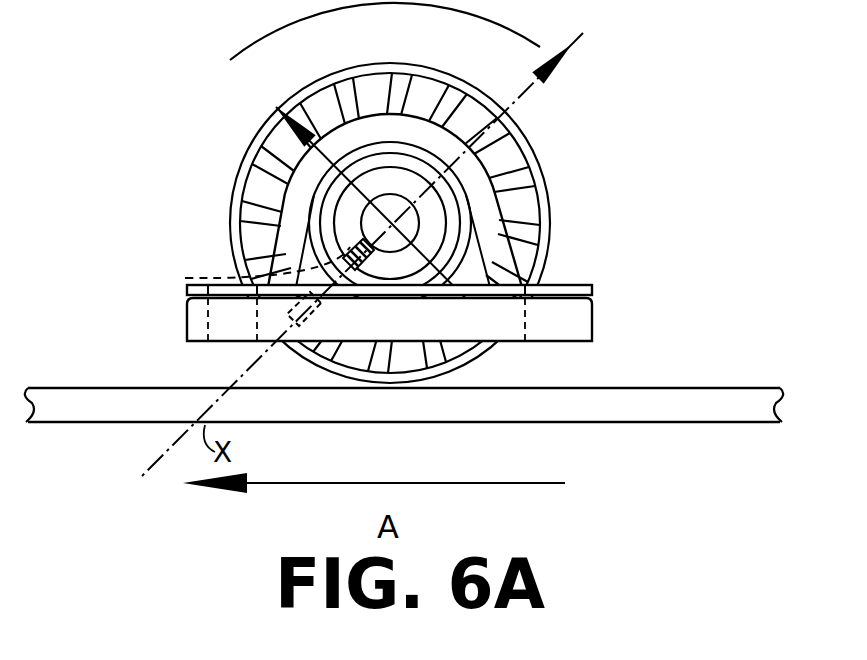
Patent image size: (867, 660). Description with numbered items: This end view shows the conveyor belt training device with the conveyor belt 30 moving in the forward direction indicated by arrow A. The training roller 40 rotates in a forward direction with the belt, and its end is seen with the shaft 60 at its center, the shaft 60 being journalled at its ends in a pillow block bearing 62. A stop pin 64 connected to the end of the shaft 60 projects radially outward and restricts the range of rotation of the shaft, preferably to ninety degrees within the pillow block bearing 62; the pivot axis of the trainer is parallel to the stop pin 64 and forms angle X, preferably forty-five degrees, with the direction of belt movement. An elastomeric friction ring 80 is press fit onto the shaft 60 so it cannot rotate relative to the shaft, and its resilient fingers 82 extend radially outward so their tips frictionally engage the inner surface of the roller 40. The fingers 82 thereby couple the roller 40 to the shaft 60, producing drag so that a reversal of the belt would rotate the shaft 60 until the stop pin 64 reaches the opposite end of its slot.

The conveyor belt 30 is at (700, 410).
The training roller 40 is at (263, 133).
The shaft 60 is at (348, 228).
The pillow block bearing 62 is at (508, 262).
The stop pin 64 is at (185, 278).
The elastomeric friction ring 80 is at (240, 175).
The fingers 82 is at (330, 88).